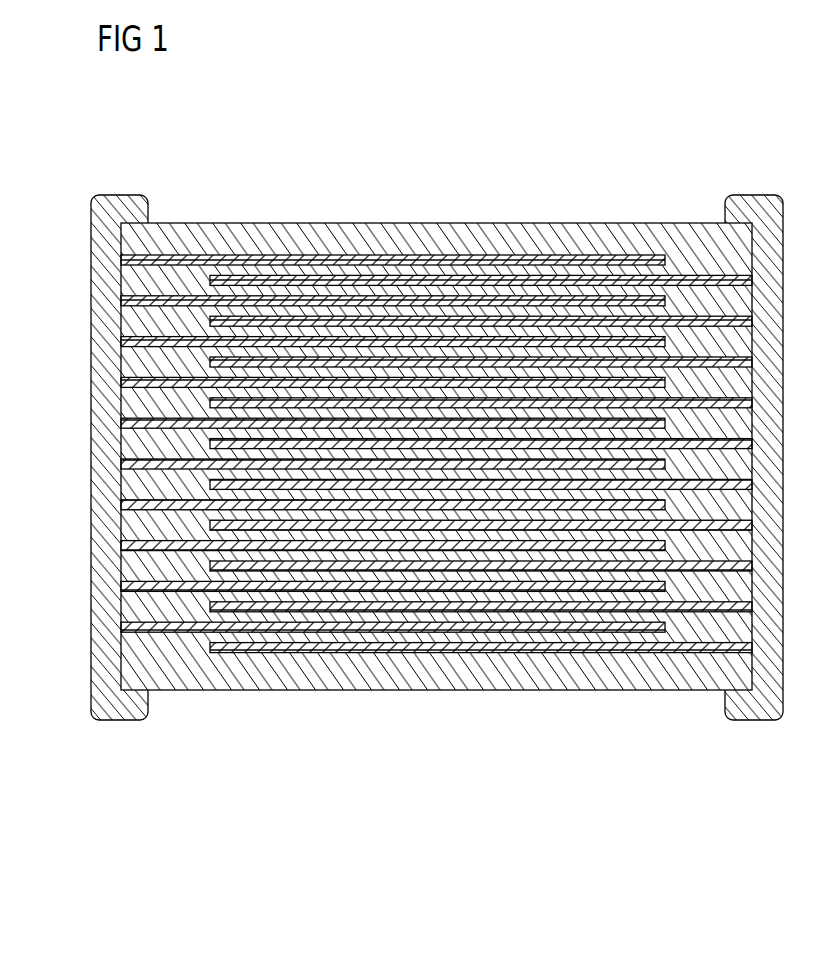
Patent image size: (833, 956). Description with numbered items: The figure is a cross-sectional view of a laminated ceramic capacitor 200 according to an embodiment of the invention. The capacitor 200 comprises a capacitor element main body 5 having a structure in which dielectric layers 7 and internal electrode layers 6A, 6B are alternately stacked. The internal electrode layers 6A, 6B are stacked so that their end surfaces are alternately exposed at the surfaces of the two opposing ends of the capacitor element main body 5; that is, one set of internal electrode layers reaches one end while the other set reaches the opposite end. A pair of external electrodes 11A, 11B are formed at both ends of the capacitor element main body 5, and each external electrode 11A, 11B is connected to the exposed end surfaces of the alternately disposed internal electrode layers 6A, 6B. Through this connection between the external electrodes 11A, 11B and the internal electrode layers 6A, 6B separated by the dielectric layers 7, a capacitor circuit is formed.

The laminated ceramic capacitor 200 is at (437, 492).
The capacitor element main body 5 is at (436, 482).
The internal electrode layer 6A is at (494, 222).
The internal electrode layer 6B is at (455, 691).
The dielectric layer 7 is at (325, 255).
The external electrode 11A is at (113, 722).
The external electrode 11B is at (752, 194).